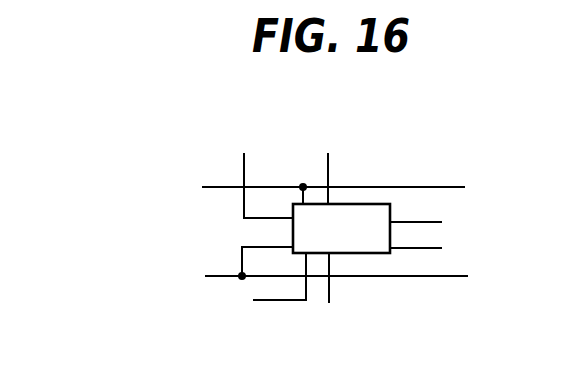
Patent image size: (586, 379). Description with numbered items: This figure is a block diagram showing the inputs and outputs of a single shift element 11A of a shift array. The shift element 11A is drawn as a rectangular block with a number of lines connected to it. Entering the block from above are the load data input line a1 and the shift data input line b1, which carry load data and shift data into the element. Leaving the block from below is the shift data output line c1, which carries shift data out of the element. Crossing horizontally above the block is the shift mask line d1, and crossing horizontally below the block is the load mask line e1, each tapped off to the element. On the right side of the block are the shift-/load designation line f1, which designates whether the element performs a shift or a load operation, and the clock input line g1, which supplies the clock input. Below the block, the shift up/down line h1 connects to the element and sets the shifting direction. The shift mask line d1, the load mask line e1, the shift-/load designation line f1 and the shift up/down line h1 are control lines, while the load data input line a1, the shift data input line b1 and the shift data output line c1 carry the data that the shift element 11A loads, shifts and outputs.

The shift element 11A is at (105, 212).
The load data input line a1 is at (260, 176).
The shift data input line b1 is at (326, 168).
The shift data output line c1 is at (321, 297).
The shift mask line d1 is at (320, 188).
The load mask line e1 is at (320, 266).
The shift-/load designation line f1 is at (429, 213).
The clock input line g1 is at (428, 251).
The shift up/down line h1 is at (262, 280).